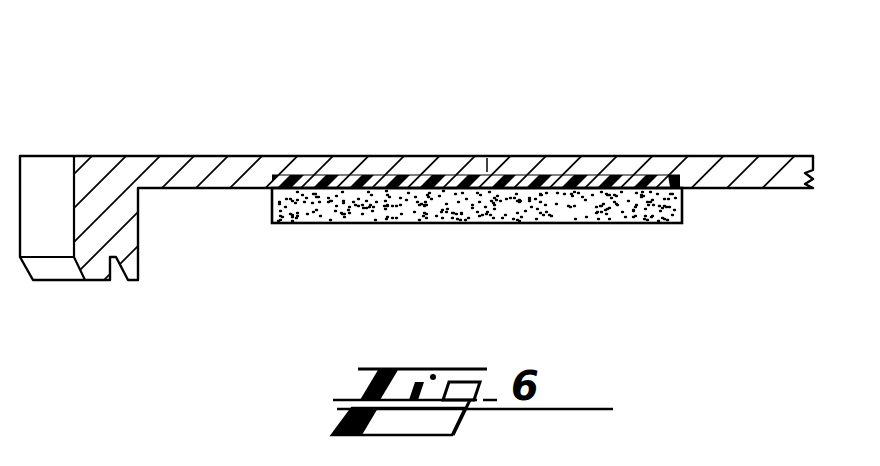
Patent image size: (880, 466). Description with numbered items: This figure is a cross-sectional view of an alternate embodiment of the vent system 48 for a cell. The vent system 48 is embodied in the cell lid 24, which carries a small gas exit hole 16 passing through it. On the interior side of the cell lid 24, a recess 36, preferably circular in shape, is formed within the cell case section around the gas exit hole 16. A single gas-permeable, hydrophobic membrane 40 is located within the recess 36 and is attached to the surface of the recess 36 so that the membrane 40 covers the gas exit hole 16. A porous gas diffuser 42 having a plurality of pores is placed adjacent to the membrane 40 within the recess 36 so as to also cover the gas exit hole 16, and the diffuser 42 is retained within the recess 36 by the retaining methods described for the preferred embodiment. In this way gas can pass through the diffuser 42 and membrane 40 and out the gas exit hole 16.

The gas exit hole 16 is at (488, 168).
The cell lid 24 is at (193, 156).
The recess 36 is at (268, 180).
The gas-permeable, hydrophobic membrane 40 is at (617, 178).
The porous gas diffuser 42 is at (443, 214).
The vent system 48 is at (390, 100).